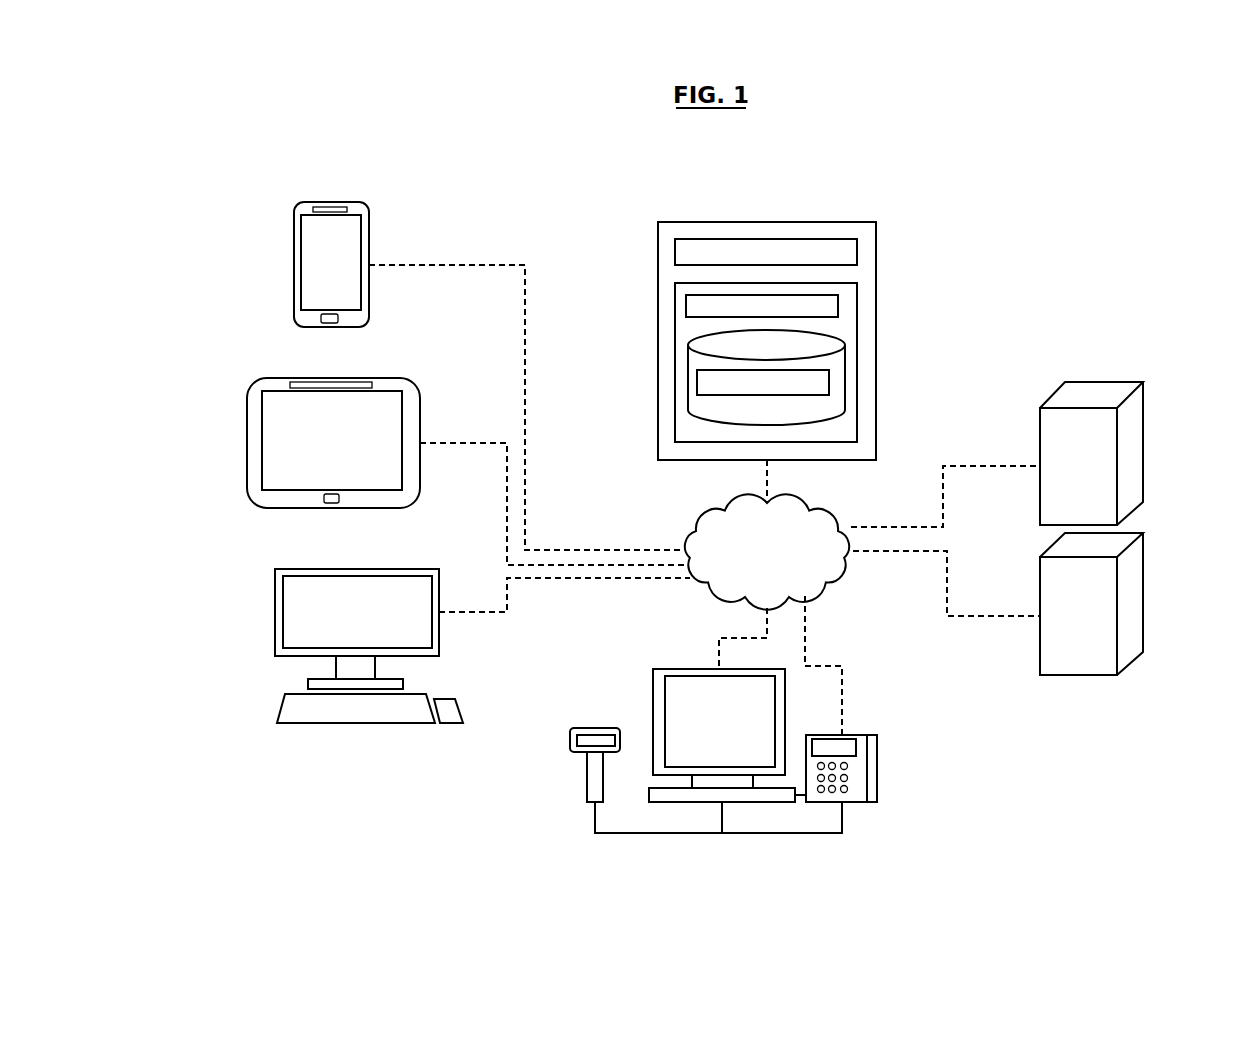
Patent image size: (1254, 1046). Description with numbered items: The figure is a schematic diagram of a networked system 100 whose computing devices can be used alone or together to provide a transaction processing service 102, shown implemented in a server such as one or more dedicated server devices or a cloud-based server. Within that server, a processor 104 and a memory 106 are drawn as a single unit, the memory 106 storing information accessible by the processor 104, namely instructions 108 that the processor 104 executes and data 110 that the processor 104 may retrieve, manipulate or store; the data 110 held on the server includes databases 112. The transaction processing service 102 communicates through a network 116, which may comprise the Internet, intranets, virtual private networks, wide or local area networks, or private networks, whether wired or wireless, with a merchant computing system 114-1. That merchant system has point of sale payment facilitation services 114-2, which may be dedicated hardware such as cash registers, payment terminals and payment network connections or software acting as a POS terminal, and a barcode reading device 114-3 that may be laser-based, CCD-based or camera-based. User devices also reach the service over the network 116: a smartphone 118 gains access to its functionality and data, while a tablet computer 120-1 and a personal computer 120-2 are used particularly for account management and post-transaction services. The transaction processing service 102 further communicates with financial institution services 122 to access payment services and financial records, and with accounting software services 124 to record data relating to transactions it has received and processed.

The system 100 is at (1132, 220).
The transaction processing service 102 is at (688, 222).
The processor 104 is at (675, 253).
The memory 106 is at (857, 295).
The instructions 108 is at (687, 307).
The data 110 is at (845, 368).
The databases 112 is at (697, 382).
The merchant computing system 114-1 is at (653, 700).
The point of sale payment facilitation services 114-2 is at (587, 774).
The barcode reading device 114-3 is at (877, 740).
The network 116 is at (749, 562).
The smartphone 118 is at (369, 221).
The tablet computer 120-1 is at (345, 378).
The personal computer 120-2 is at (275, 630).
The financial institution services 122 is at (1143, 438).
The accounting software services 124 is at (1143, 586).